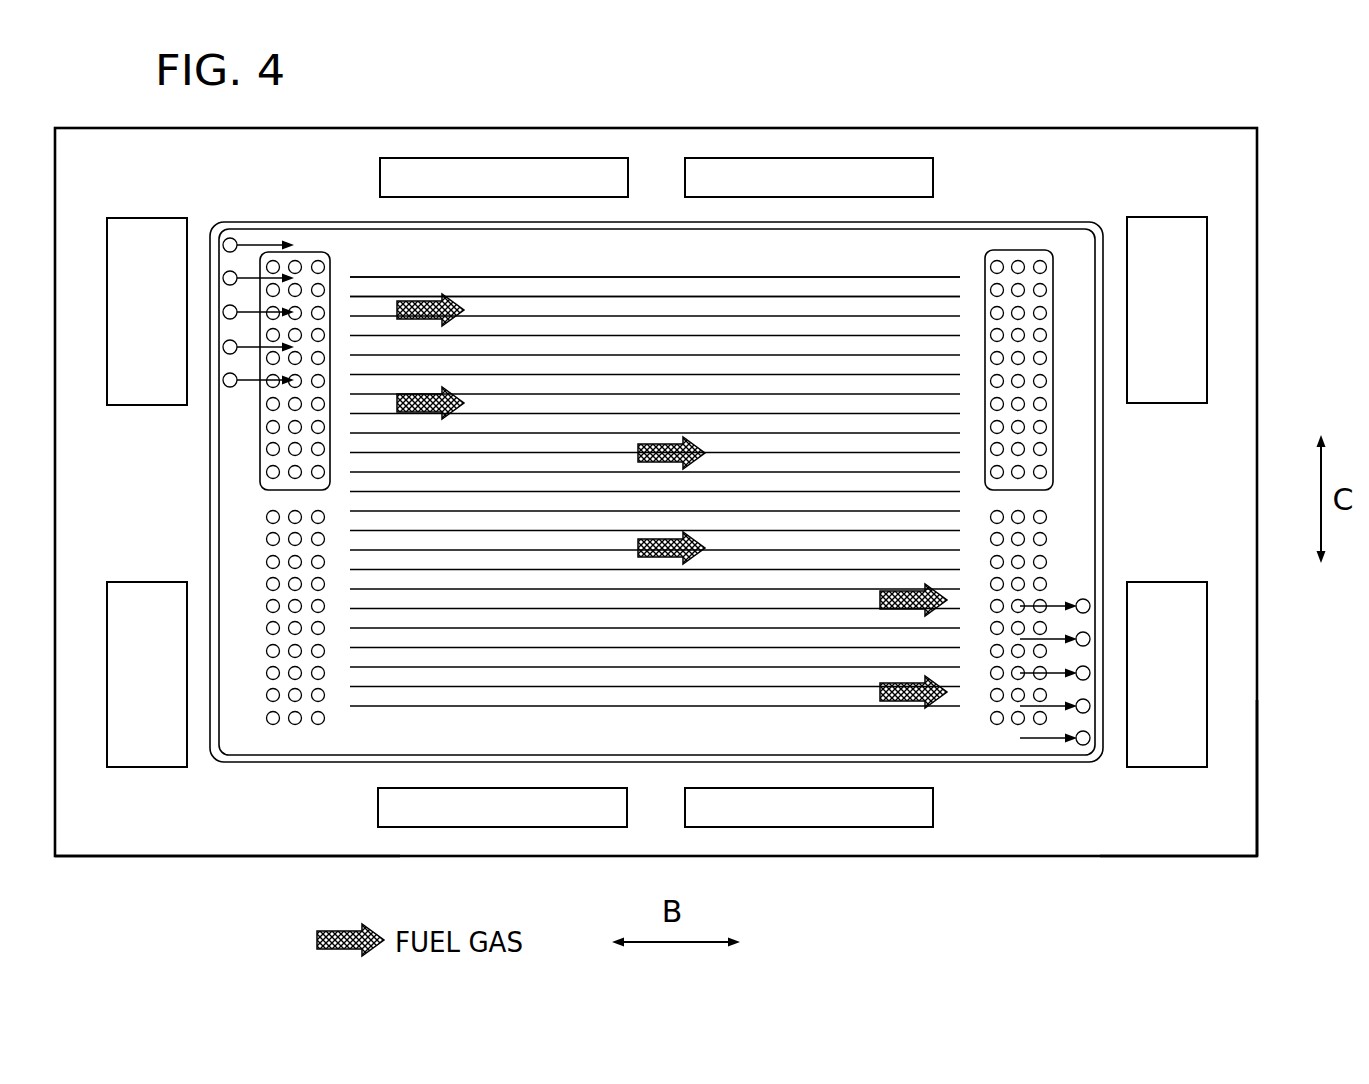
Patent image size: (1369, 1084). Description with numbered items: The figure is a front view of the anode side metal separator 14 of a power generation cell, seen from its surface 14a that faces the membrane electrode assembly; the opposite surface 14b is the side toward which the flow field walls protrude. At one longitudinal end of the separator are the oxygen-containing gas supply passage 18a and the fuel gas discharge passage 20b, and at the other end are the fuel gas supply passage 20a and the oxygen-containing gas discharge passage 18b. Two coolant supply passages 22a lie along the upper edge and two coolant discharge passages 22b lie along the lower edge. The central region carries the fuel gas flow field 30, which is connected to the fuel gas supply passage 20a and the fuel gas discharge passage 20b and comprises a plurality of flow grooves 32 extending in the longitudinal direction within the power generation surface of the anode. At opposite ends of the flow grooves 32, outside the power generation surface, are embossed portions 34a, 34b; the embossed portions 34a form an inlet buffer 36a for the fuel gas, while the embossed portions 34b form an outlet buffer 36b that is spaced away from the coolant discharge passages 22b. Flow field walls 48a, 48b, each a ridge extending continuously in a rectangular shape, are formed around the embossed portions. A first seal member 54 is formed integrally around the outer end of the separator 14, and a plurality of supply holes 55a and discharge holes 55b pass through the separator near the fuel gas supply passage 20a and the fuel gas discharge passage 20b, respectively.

The anode side metal separator 14 is at (618, 93).
The surface 14a is at (1166, 822).
The surface 14b is at (1230, 822).
The oxygen-containing gas supply passage 18a is at (1167, 310).
The oxygen-containing gas discharge passage 18b is at (147, 674).
The fuel gas supply passage 20a is at (147, 311).
The fuel gas discharge passage 20b is at (1167, 674).
The coolant supply passages 22a is at (656, 177).
The coolant discharge passages 22b is at (655, 807).
The fuel gas flow field 30 is at (667, 280).
The flow grooves 32 is at (640, 287).
The embossed portions 34a is at (266, 538).
The embossed portions 34b is at (1047, 516).
The inlet buffer 36a is at (248, 406).
The outlet buffer 36b is at (1068, 582).
The flow field wall 48a is at (1013, 250).
The flow field wall 48b is at (300, 250).
The first seal member 54 is at (139, 858).
The supply holes 55a is at (224, 240).
The discharge holes 55b is at (1088, 746).